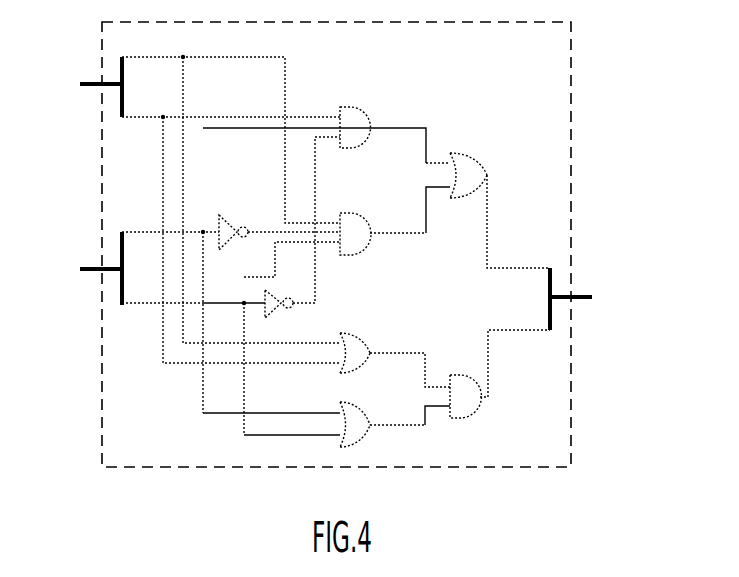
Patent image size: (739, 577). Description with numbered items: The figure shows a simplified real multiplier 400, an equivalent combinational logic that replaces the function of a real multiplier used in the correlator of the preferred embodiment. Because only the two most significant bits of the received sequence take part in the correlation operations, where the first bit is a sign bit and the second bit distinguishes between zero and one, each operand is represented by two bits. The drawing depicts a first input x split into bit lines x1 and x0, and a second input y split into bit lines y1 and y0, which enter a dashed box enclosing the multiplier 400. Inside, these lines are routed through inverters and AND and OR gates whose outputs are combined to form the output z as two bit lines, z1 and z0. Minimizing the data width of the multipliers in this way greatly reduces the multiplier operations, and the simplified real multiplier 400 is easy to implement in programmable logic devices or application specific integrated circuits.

The simplified real multiplier 400 is at (572, 200).
The input signal x[1] x1 is at (231, 188).
The input signal x[0] x0 is at (231, 227).
The input signal y[1] y1 is at (170, 310).
The input signal y[0] y0 is at (231, 338).
The output signal z[1] z1 is at (518, 221).
The output signal z[0] z0 is at (515, 352).